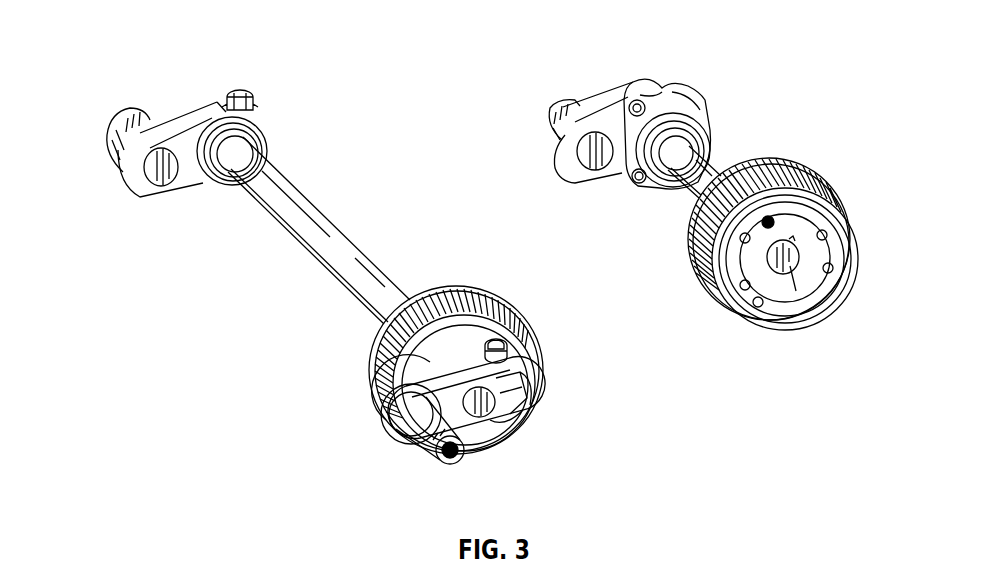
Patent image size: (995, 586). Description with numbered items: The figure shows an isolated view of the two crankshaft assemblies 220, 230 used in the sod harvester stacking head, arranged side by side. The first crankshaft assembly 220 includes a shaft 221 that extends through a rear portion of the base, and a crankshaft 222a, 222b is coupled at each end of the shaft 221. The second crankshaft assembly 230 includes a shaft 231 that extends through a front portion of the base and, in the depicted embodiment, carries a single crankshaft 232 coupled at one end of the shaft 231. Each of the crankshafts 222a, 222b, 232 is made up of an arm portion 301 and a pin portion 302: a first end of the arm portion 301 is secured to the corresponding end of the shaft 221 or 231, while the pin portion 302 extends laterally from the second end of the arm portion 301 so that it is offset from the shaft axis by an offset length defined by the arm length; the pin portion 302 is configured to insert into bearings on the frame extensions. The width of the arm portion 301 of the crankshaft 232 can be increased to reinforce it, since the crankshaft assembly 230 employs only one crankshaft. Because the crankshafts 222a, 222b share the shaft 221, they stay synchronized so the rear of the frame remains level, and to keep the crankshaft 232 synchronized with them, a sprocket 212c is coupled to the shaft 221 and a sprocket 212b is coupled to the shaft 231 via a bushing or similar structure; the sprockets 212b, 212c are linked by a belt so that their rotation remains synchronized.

The crankshaft assembly 220 is at (302, 110).
The shaft 221 is at (327, 217).
The crankshaft 222a is at (400, 453).
The crankshaft 222b is at (108, 184).
The arm portion 301 is at (200, 185).
The pin portion 302 is at (115, 110).
The sprocket 212c is at (519, 427).
The sprocket 212b is at (852, 196).
The crankshaft assembly 230 is at (706, 60).
The shaft 231 is at (706, 158).
The crankshaft 232 is at (590, 100).